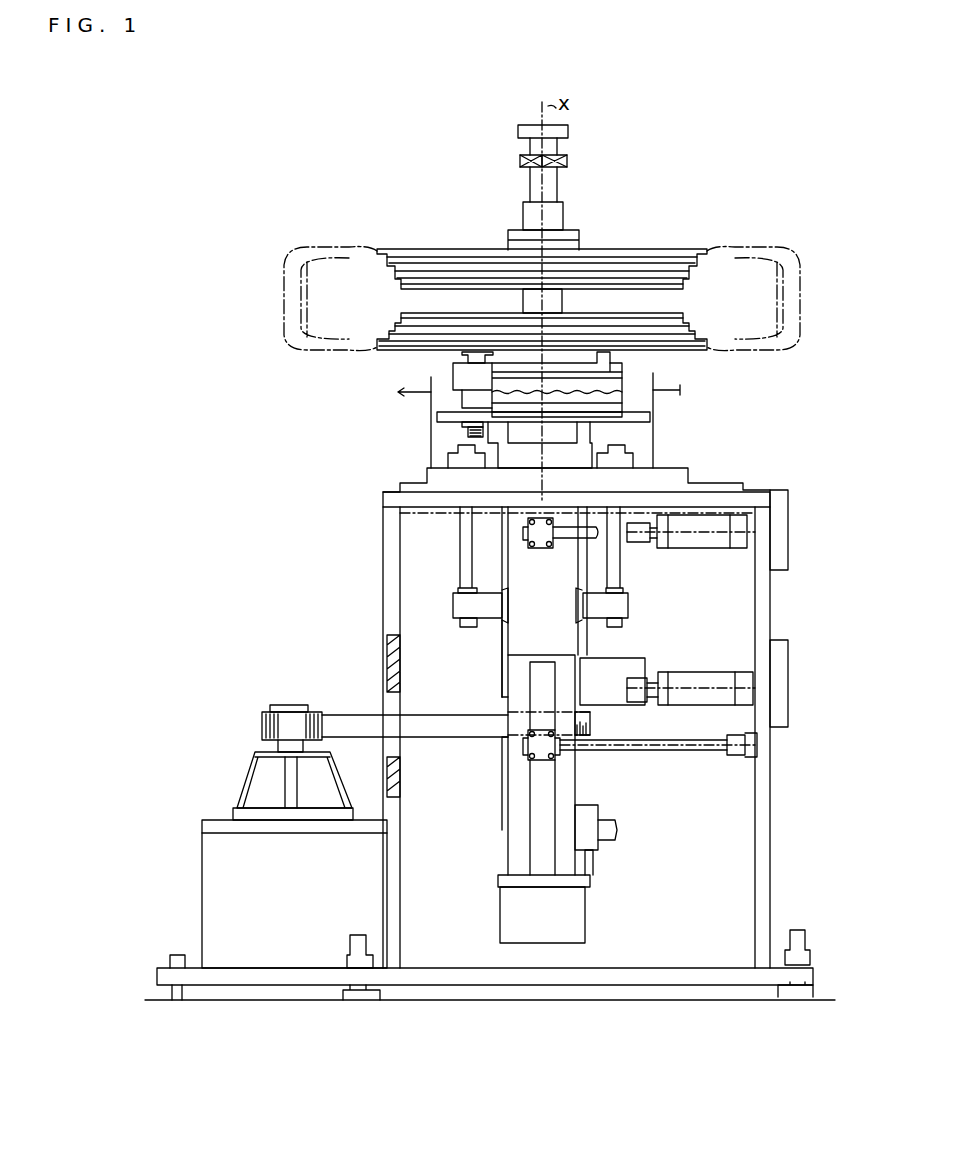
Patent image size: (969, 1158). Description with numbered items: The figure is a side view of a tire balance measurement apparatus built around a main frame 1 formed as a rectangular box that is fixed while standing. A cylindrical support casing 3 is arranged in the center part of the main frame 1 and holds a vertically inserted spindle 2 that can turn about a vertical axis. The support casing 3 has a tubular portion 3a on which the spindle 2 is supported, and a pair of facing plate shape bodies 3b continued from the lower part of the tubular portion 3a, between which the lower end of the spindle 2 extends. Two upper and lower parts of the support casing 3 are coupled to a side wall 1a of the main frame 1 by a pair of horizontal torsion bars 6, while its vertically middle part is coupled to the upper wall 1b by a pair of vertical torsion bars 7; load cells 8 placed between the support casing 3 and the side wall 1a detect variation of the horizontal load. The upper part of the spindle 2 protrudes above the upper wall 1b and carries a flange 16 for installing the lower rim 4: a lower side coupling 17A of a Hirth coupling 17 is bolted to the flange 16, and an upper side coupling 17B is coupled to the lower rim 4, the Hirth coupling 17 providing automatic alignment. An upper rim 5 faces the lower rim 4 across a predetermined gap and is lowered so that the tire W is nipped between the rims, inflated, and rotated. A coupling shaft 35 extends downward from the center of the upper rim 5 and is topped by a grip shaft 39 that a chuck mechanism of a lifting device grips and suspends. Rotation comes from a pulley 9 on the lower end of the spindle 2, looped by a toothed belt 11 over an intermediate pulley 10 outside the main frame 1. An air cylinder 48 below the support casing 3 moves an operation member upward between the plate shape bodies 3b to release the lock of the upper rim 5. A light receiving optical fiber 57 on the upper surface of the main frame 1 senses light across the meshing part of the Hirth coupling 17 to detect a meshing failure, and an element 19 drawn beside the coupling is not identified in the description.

The tire W is at (318, 244).
The main frame 1 is at (378, 551).
The side wall 1a is at (770, 608).
The upper wall 1b is at (684, 468).
The spindle 2 is at (582, 436).
The support casing 3 is at (500, 777).
The tubular portion 3a is at (513, 640).
The plate shape body 3b is at (505, 808).
The lower rim 4 is at (399, 353).
The upper rim 5 is at (434, 250).
The torsion bar 6 is at (571, 542).
The torsion bar 7 is at (462, 568).
The load cell 8 is at (702, 548).
The pulley 9 is at (590, 721).
The intermediate pulley 10 is at (262, 728).
The toothed belt 11 is at (350, 710).
The flange 16 is at (612, 408).
The Hirth coupling 17 is at (728, 368).
The lower side coupling 17A is at (624, 395).
The upper side coupling 17B is at (624, 378).
The post 19 is at (448, 392).
The coupling shaft 35 is at (566, 300).
The grip shaft 39 is at (564, 185).
The air cylinder 48 is at (588, 921).
The light receiving optical fiber 57 is at (418, 398).